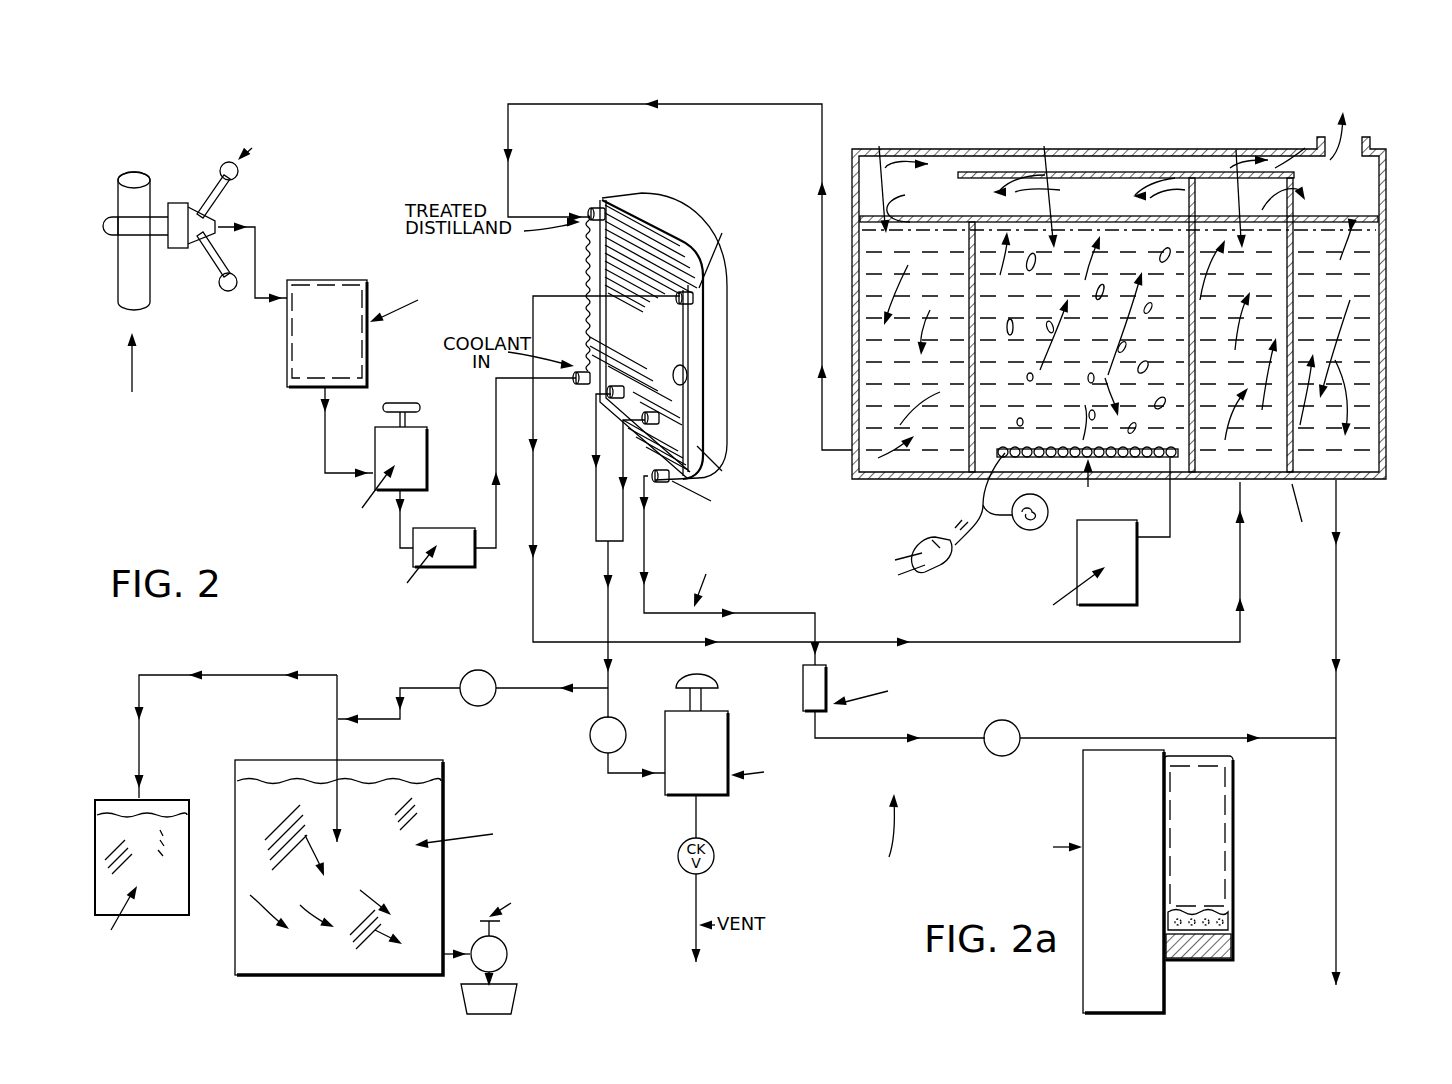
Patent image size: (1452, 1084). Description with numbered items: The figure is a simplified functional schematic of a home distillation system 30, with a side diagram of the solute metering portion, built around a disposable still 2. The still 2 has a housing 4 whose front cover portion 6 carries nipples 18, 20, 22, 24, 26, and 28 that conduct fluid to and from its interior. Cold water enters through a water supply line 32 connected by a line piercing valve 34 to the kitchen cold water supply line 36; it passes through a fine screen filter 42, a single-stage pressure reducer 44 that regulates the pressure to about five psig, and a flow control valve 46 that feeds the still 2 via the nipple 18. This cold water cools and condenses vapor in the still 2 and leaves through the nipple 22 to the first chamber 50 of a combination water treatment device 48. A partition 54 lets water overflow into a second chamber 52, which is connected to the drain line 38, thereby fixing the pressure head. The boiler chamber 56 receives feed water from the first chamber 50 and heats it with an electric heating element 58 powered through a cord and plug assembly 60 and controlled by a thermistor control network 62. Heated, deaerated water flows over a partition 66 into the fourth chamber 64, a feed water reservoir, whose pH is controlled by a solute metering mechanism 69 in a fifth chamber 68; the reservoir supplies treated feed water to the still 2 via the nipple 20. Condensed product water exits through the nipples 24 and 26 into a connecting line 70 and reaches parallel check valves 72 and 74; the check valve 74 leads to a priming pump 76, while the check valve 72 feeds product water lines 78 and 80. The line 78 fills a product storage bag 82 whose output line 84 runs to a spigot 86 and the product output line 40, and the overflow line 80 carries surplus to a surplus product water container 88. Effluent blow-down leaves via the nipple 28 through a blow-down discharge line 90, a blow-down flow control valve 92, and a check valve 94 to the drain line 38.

In FIG. 2, the disposable still 2 is at (755, 344).
In FIG. 2, the housing 4 is at (722, 332).
In FIG. 2, the front cover portion 6 is at (690, 383).
In FIG. 2, the nipple 18 is at (579, 388).
In FIG. 2, the nipple 20 is at (595, 206).
In FIG. 2, the nipple 22 is at (704, 302).
In FIG. 2, the nipple 24 is at (612, 386).
In FIG. 2, the nipple 26 is at (661, 422).
In FIG. 2, the nipple 28 is at (665, 483).
In FIG. 2a, the distillation system 30 is at (886, 837).
In FIG. 2, the water supply line 32 is at (260, 257).
In FIG. 2, the line piercing valve 34 is at (178, 202).
In FIG. 2, the cold water supply line 36 is at (133, 187).
In FIG. 2, the drain line 38 is at (1340, 804).
In FIG. 2, the product output line 40 is at (511, 980).
In FIG. 2, the fine screen filter 42 is at (318, 280).
In FIG. 2, the single-stage pressure reducer 44 is at (422, 424).
In FIG. 2, the flow control valve 46 is at (438, 568).
In FIG. 2, the combination water treatment device 48 is at (1364, 498).
In FIG. 2a, the combination water treatment device 48 is at (1212, 970).
In FIG. 2, the first chamber 50 is at (1257, 480).
In FIG. 2, the second chamber 52 is at (1347, 419).
In FIG. 2, the partition 54 is at (1290, 297).
In FIG. 2, the boiler chamber 56 is at (1161, 352).
In FIG. 2, the electric heating element 58 is at (1077, 442).
In FIG. 2, the cord and plug assembly 60 is at (977, 512).
In FIG. 2, the thermistor control network 62 is at (1139, 577).
In FIG. 2, the fourth chamber 64 is at (927, 226).
In FIG. 2, the partition 66 is at (967, 352).
In FIG. 2a, the fifth chamber 68 is at (1233, 947).
In FIG. 2a, the solute metering mechanism 69 is at (1215, 852).
In FIG. 2, the connecting line 70 is at (606, 620).
In FIG. 2, the check valve 72 is at (478, 668).
In FIG. 2, the check valve 74 is at (632, 730).
In FIG. 2, the priming pump 76 is at (730, 737).
In FIG. 2, the product water line 78 is at (339, 743).
In FIG. 2, the product water line 80 is at (302, 673).
In FIG. 2, the product storage bag 82 is at (443, 814).
In FIG. 2, the output line 84 is at (445, 952).
In FIG. 2, the spigot 86 is at (503, 930).
In FIG. 2, the surplus product water container 88 is at (200, 768).
In FIG. 2, the blow-down discharge line 90 is at (767, 613).
In FIG. 2, the blow-down flow control valve 92 is at (830, 678).
In FIG. 2, the check valve 94 is at (1001, 757).